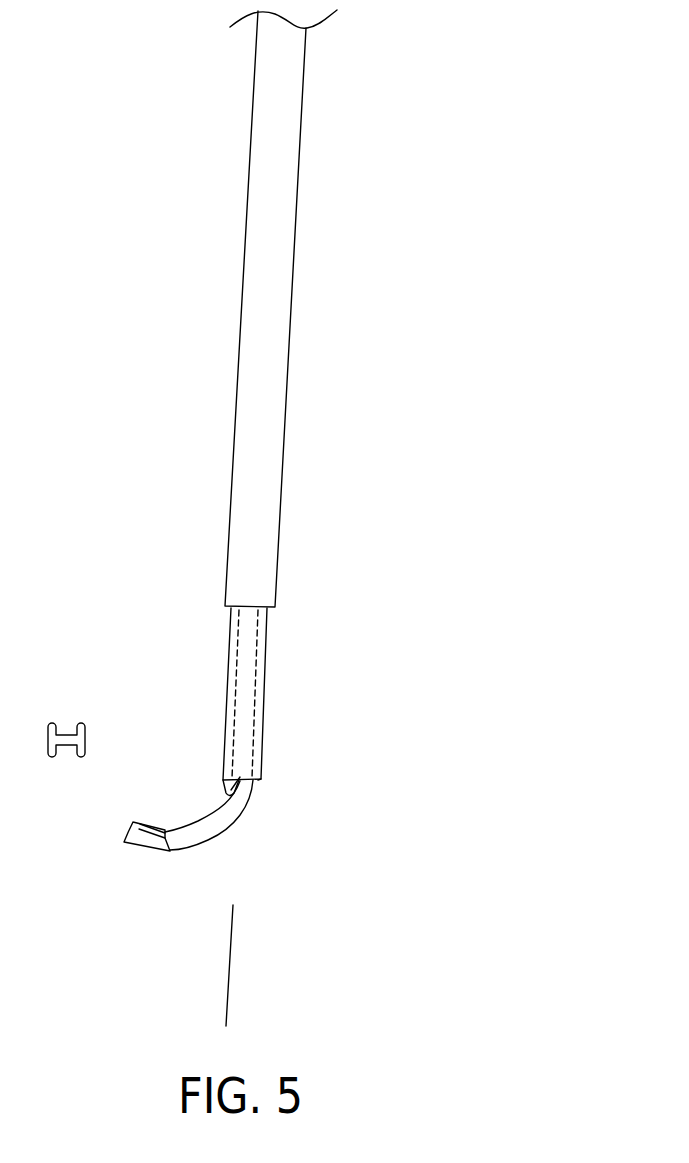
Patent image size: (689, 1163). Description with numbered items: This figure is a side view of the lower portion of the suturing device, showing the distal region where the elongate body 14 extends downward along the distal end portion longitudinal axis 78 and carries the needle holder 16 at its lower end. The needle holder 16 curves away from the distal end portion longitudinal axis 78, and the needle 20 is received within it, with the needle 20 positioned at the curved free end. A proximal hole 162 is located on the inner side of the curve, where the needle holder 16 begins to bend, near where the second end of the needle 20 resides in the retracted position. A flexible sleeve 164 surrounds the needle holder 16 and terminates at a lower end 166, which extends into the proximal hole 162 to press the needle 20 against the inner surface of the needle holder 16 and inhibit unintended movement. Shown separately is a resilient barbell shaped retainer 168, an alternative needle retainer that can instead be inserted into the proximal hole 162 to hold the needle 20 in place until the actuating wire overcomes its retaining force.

The elongate body 14 is at (272, 320).
The needle holder 16 is at (200, 830).
The needle 20 is at (163, 828).
The distal end portion longitudinal axis 78 is at (229, 977).
The proximal hole 162 is at (222, 786).
The flexible sleeve 164 is at (262, 652).
The lower end 166 is at (254, 781).
The resilient barbell shaped retainer 168 is at (64, 716).